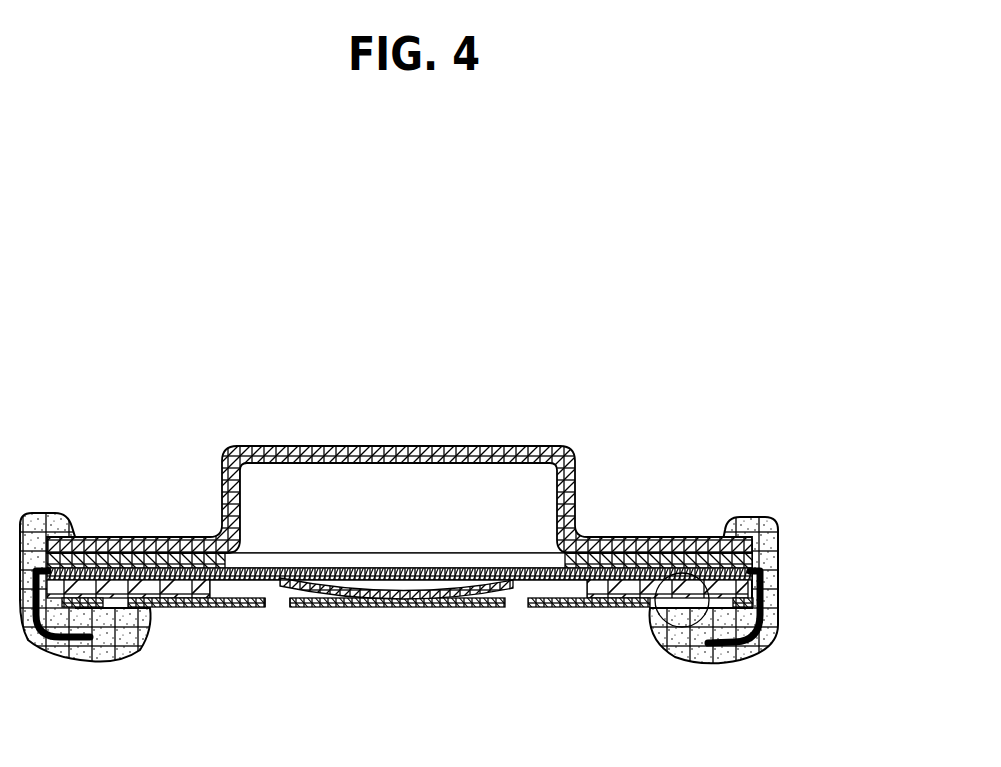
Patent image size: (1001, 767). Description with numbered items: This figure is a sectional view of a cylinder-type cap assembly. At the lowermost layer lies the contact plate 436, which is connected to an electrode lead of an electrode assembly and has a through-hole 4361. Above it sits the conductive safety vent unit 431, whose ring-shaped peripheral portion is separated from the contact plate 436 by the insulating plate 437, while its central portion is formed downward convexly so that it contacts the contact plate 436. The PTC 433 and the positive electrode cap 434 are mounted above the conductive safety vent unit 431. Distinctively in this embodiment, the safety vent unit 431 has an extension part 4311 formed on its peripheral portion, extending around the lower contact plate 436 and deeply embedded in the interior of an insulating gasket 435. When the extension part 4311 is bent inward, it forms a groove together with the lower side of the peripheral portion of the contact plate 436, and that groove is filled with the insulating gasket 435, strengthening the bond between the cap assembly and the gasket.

The conductive safety vent unit 431 is at (483, 593).
The extension part 4311 is at (750, 643).
The PTC 433 is at (653, 563).
The positive electrode cap 434 is at (371, 446).
The insulating gasket 435 is at (767, 548).
The contact plate 436 is at (372, 605).
The opening in bottom plate 4361 is at (277, 603).
The insulating plate 437 is at (173, 592).